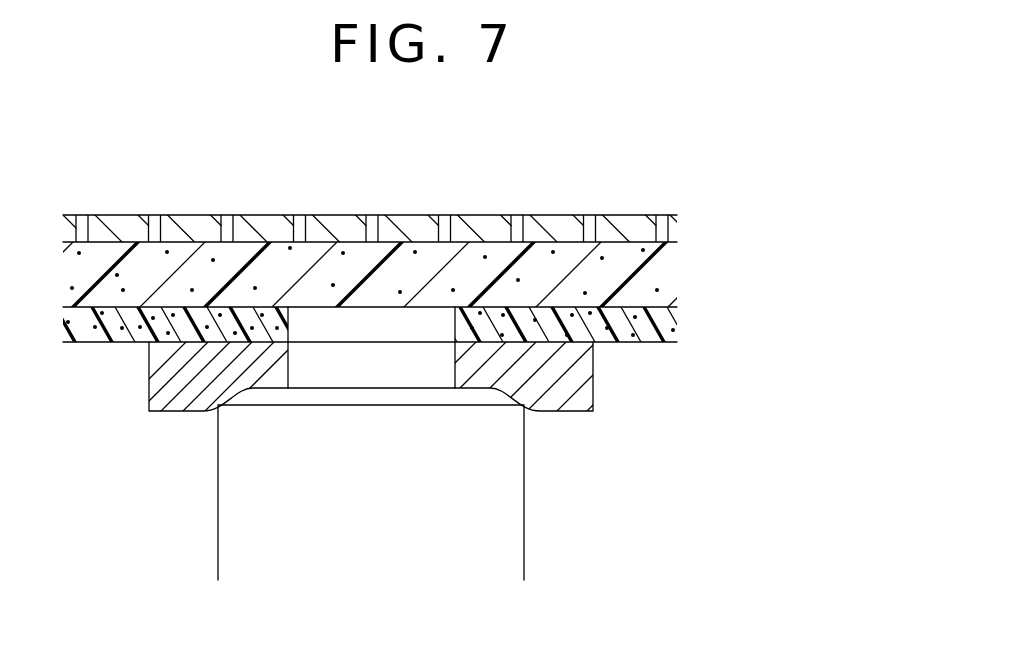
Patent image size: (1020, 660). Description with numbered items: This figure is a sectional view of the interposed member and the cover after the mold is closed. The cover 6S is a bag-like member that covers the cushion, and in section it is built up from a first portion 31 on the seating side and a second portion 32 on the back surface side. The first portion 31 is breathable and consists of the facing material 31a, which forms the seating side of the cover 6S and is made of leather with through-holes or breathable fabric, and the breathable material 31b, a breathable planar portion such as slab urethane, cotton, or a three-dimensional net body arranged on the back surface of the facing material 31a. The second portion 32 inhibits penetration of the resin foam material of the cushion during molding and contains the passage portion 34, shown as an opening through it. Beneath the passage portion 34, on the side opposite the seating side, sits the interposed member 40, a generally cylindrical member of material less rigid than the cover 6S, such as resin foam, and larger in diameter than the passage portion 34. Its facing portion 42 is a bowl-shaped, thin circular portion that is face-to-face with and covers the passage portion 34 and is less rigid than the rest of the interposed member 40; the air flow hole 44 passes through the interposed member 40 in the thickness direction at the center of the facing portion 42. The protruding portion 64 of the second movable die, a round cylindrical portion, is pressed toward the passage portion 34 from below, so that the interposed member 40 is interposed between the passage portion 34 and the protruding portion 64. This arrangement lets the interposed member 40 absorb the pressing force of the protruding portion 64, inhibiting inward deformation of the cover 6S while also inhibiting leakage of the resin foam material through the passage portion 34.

The cover 6S is at (634, 212).
The first portion 31 is at (414, 258).
The facing material 31a is at (672, 225).
The breathable material 31b is at (667, 268).
The second portion 32 is at (660, 315).
The passage portion 34 is at (366, 329).
The interposed member 40 is at (395, 395).
The facing portion 42 is at (503, 365).
The air flow hole 44 is at (391, 363).
The protruding portion 64 is at (240, 458).